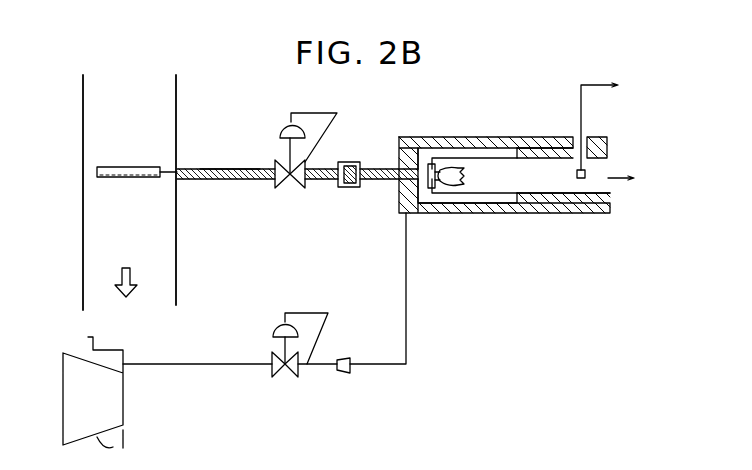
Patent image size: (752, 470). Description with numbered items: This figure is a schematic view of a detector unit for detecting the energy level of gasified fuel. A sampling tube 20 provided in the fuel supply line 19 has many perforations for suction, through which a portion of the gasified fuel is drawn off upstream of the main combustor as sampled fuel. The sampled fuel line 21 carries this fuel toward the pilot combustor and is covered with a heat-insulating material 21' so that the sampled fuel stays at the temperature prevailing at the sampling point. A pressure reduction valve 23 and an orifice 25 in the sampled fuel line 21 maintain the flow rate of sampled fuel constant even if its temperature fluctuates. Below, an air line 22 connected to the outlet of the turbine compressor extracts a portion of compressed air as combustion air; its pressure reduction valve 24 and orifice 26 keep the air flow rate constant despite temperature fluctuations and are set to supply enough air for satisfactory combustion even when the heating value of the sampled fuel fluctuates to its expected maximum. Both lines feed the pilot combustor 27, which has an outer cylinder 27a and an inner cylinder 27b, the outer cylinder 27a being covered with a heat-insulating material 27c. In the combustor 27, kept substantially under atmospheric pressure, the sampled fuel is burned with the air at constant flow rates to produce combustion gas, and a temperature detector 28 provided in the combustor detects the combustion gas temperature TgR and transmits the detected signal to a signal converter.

The fuel supply line 19 is at (176, 103).
The sampling tube 20 is at (127, 168).
The sampled fuel line 21 is at (297, 191).
The heat-insulating material 21' is at (230, 144).
The air line 22 is at (170, 364).
The pressure reduction valve 23 is at (295, 188).
The pressure reduction valve 24 is at (287, 378).
The orifice 25 is at (349, 162).
The orifice 26 is at (344, 359).
The pilot combustor 27 is at (414, 136).
The outer cylinder 27a is at (447, 148).
The inner cylinder 27b is at (457, 203).
The heat-insulating material 27c is at (548, 147).
The temperature detector 28 is at (586, 177).